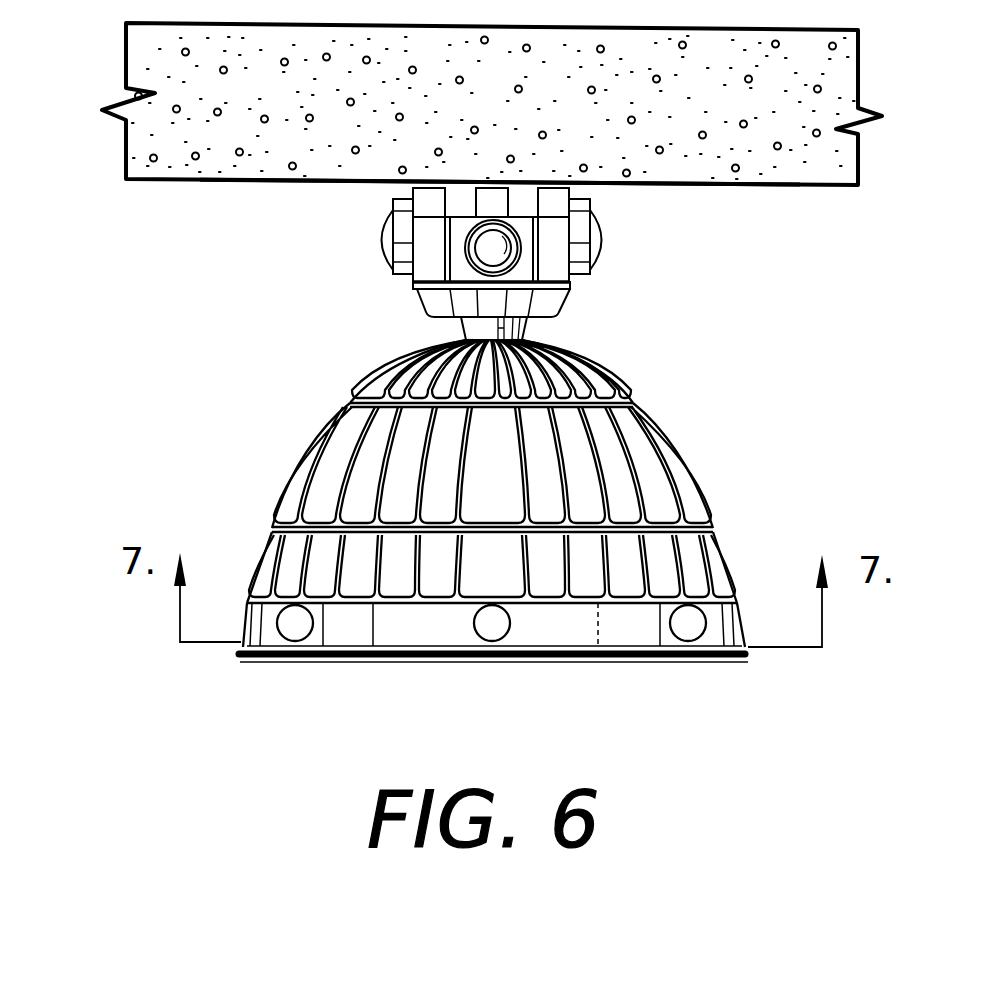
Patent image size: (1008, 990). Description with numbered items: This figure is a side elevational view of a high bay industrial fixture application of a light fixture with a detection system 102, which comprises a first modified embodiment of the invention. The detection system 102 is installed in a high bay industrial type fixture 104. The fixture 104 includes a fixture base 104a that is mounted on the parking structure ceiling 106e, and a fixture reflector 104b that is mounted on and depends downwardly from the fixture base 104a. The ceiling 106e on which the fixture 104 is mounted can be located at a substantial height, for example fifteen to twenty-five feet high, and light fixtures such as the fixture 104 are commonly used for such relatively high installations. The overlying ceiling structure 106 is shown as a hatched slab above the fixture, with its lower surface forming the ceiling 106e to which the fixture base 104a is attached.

The detection system 102 is at (785, 355).
The high bay industrial type fixture 104 is at (300, 343).
The fixture base 104a is at (573, 287).
The fixture reflector 104b is at (238, 660).
The ceiling structure 106 is at (130, 180).
The ceiling 106e is at (818, 186).